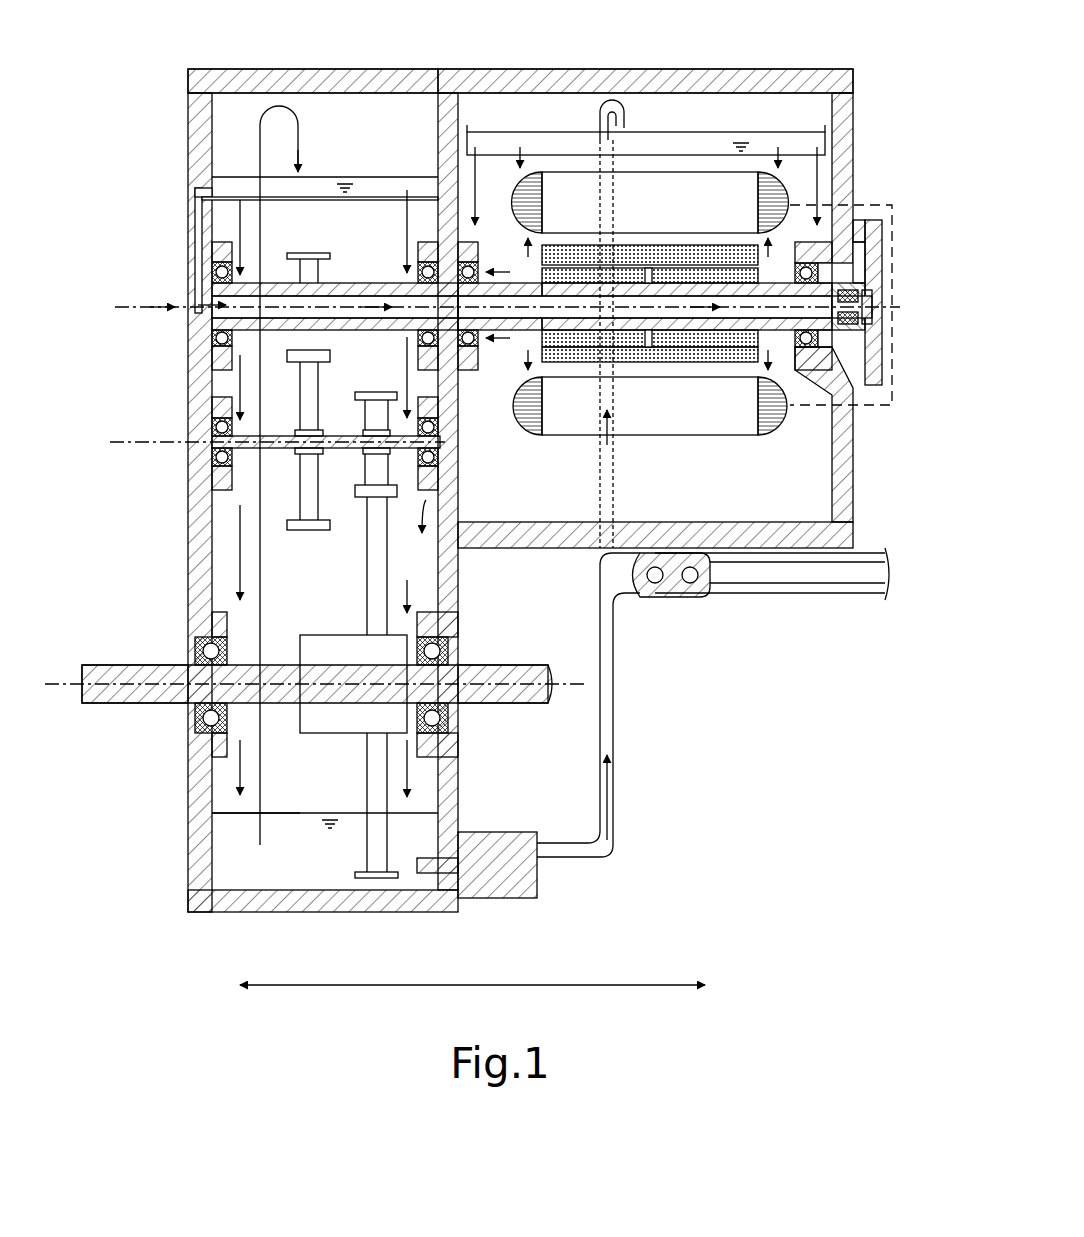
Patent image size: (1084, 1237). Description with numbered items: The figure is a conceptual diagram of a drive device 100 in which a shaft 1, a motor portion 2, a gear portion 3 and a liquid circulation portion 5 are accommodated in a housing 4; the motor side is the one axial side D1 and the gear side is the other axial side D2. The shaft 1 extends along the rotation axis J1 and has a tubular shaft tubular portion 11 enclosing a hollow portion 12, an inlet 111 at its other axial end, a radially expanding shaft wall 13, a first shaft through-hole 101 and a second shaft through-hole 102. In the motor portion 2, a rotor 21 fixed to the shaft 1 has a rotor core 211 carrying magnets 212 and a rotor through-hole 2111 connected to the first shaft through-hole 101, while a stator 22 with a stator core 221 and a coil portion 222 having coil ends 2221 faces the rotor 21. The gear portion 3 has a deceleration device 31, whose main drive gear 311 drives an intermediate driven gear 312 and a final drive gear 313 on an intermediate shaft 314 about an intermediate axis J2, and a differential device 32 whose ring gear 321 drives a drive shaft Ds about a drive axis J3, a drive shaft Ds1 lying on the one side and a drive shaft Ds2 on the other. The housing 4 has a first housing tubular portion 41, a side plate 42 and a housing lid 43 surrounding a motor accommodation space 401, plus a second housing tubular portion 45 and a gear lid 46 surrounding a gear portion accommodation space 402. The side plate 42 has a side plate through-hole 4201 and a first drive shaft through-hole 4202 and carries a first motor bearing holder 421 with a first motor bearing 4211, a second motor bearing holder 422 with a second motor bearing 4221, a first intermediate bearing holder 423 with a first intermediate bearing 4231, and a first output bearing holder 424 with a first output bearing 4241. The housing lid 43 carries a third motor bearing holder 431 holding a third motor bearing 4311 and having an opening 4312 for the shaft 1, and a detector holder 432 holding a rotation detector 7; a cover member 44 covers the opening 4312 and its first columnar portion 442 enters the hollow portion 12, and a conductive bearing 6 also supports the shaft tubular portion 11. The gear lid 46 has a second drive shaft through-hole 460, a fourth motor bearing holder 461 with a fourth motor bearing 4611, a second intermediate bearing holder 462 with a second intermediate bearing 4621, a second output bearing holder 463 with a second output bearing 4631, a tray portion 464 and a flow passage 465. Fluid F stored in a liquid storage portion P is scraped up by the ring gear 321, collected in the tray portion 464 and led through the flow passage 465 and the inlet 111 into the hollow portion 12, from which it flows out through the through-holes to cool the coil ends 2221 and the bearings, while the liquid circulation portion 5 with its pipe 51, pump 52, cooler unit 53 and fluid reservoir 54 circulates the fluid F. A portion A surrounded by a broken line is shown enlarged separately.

The drive device 100 is at (840, 55).
The shaft 1 is at (565, 330).
The first shaft through-hole 101 is at (632, 320).
The second shaft through-hole 102 is at (872, 360).
The shaft tubular portion 11 is at (275, 330).
The inlet 111 is at (210, 310).
The hollow portion 12 is at (520, 332).
The shaft wall 13 is at (886, 300).
The motor portion 2 is at (572, 170).
The rotor 21 is at (735, 245).
The rotor core 211 is at (635, 250).
The rotor through-hole 2111 is at (650, 268).
The magnet 212 is at (566, 245).
The stator 22 is at (700, 445).
The stator core 221 is at (648, 435).
The coil portion 222 is at (770, 430).
The coil end 2221 is at (790, 420).
The gear portion 3 is at (290, 510).
The deceleration device 31 is at (324, 244).
The main drive gear 311 is at (332, 256).
The intermediate driven gear 312 is at (310, 530).
The final drive gear 313 is at (380, 394).
The intermediate shaft 314 is at (342, 455).
The differential device 32 is at (318, 735).
The ring gear 321 is at (375, 878).
The housing 4 is at (858, 93).
The first housing tubular portion 41 is at (675, 80).
The side plate 42 is at (430, 100).
The housing lid 43 is at (853, 128).
The cover member 44 is at (878, 385).
The second housing tubular portion 45 is at (275, 75).
The gear lid 46 is at (210, 152).
The motor accommodation space 401 is at (540, 508).
The gear portion accommodation space 402 is at (292, 610).
The first motor bearing holder 421 is at (470, 370).
The first motor bearing 4211 is at (490, 268).
The second motor bearing holder 422 is at (430, 262).
The second motor bearing 4221 is at (410, 268).
The side plate through-hole 4201 is at (428, 340).
The first drive shaft through-hole 4202 is at (445, 740).
The first intermediate bearing holder 423 is at (440, 480).
The first intermediate bearing 4231 is at (435, 450).
The first output bearing holder 424 is at (445, 620).
The first output bearing 4241 is at (450, 650).
The third motor bearing holder 431 is at (853, 165).
The third motor bearing 4311 is at (847, 385).
The opening 4312 is at (835, 272).
The detector holder 432 is at (855, 250).
The first columnar portion 442 is at (867, 312).
The second drive shaft through-hole 460 is at (205, 748).
The fourth motor bearing holder 461 is at (220, 370).
The fourth motor bearing 4611 is at (215, 340).
The second intermediate bearing holder 462 is at (220, 490).
The second intermediate bearing 4621 is at (215, 452).
The second output bearing holder 463 is at (205, 612).
The second output bearing 4631 is at (200, 640).
The tray portion 464 is at (288, 200).
The flow passage 465 is at (197, 248).
The liquid circulation portion 5 is at (640, 640).
The pipe 51 is at (615, 730).
The pump 52 is at (498, 898).
The cooler unit 53 is at (675, 597).
The fluid reservoir 54 is at (492, 155).
The conductive bearing 6 is at (855, 335).
The rotation detector 7 is at (865, 265).
The portion A is at (893, 218).
The fluid F is at (703, 310).
The liquid storage portion P is at (345, 815).
The rotation axis J1 is at (148, 305).
The intermediate axis J2 is at (122, 440).
The drive axis J3 is at (66, 682).
The drive shaft Ds is at (172, 704).
The drive shaft on the one axial side Ds1 is at (520, 703).
The drive shaft on the other axial side Ds2 is at (118, 700).
The one axial side D1 is at (621, 985).
The other axial side D2 is at (331, 985).